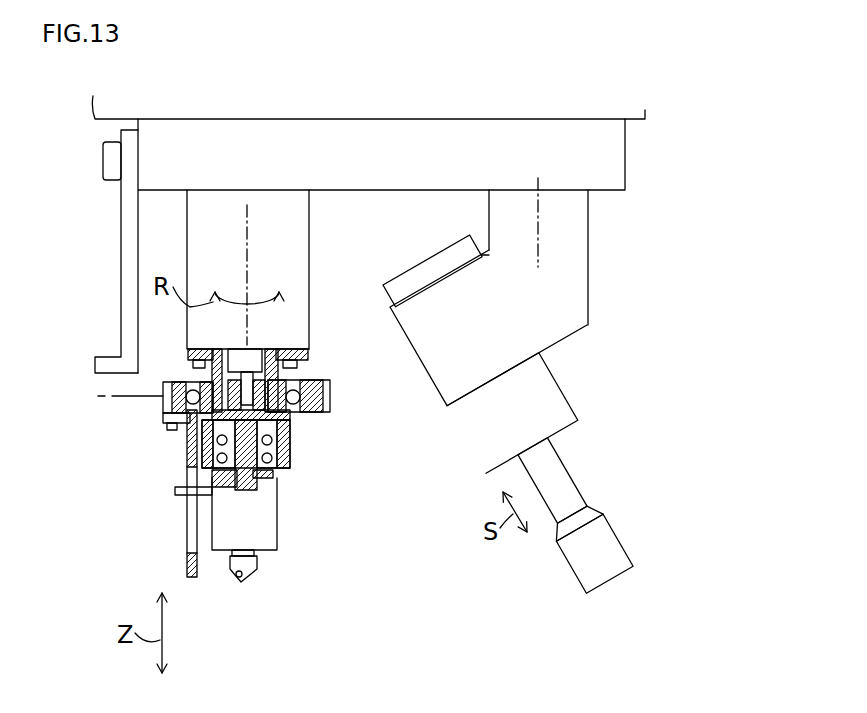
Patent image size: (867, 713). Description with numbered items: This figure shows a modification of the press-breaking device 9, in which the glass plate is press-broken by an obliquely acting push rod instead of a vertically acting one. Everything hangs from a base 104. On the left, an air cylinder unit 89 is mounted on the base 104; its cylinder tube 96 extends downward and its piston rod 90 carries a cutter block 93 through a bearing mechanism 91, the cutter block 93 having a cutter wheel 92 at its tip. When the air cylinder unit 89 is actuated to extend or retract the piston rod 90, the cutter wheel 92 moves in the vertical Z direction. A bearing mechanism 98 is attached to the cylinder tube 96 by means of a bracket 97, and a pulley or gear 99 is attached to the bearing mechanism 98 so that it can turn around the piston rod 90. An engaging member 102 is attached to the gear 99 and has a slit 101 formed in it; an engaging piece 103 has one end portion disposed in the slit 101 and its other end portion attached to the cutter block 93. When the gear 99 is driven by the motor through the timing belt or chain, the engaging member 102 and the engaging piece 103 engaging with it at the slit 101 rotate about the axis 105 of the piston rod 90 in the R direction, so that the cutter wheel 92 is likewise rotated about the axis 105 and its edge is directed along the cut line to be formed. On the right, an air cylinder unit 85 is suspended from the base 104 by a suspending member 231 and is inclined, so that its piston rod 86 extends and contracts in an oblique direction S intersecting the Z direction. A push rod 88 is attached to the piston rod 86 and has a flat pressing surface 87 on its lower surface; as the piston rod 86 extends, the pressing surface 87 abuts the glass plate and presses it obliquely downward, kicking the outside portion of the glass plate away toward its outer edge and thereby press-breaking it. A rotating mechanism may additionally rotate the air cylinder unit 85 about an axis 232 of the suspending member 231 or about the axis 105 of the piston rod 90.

The press-breaking device 9 is at (102, 413).
The air cylinder unit 85 is at (562, 393).
The piston rod 86 is at (561, 462).
The pressing surface 87 is at (607, 580).
The push rod 88 is at (612, 546).
The air cylinder unit 89 is at (296, 227).
The piston rod 90 is at (258, 361).
The bearing mechanism 91 is at (275, 472).
The cutter wheel 92 is at (240, 584).
The cutter block 93 is at (272, 540).
The cylinder tube 96 is at (303, 310).
The bracket 97 is at (282, 410).
The bearing mechanism 98 is at (192, 390).
The pulley or gear 99 is at (331, 398).
The slit 101 is at (185, 541).
The engaging member 102 is at (188, 450).
The engaging piece 103 is at (177, 491).
The base 104 is at (625, 156).
The axis 105 is at (253, 288).
The suspending member 231 is at (588, 263).
The axis 232 is at (540, 237).